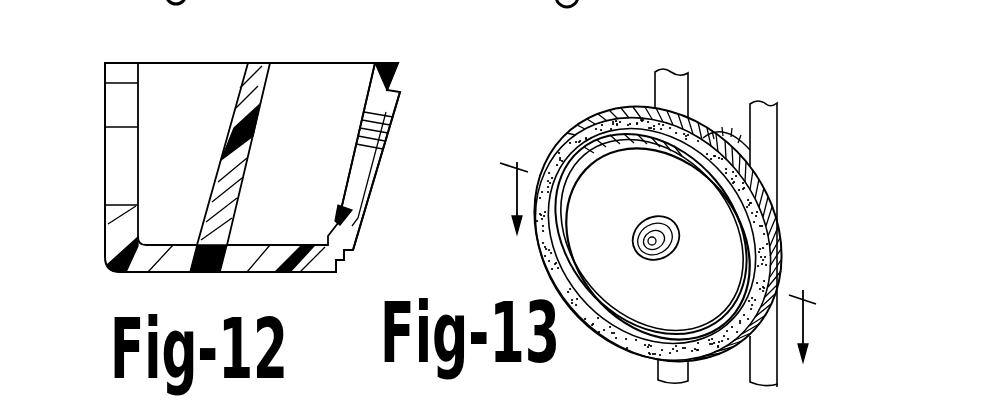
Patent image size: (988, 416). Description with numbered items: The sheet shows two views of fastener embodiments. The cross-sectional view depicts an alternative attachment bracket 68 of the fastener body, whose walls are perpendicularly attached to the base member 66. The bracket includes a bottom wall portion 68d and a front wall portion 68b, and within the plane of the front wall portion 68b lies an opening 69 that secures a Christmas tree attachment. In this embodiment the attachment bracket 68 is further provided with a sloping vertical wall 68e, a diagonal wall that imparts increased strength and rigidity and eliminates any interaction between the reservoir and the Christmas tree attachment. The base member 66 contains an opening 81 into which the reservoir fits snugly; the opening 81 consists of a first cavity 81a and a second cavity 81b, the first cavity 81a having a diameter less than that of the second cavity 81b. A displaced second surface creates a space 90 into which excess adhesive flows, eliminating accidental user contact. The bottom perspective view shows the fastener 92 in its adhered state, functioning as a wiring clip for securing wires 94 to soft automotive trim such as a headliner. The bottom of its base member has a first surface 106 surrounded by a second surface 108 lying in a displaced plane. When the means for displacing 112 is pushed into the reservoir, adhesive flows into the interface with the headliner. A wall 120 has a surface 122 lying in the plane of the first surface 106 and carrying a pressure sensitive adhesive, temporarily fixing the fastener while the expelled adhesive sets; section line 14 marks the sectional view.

In FIG. 12, the attachment bracket 68 is at (100, 278).
In FIG. 12, the front wall portion 68b is at (120, 224).
In FIG. 12, the bottom wall portion 68d is at (172, 262).
In FIG. 12, the sloping vertical wall 68e is at (262, 86).
In FIG. 12, the opening 69 is at (117, 203).
In FIG. 12, the base member 66 is at (376, 103).
In FIG. 12, the opening 81 is at (338, 185).
In FIG. 12, the first cavity 81a is at (368, 182).
In FIG. 12, the second cavity 81b is at (380, 148).
In FIG. 12, the space 90 is at (402, 82).
In FIG. 13, the fastener 92 is at (590, 98).
In FIG. 13, the wires 94 is at (770, 136).
In FIG. 13, the first surface 106 is at (665, 313).
In FIG. 13, the second surface 108 is at (583, 156).
In FIG. 13, the means for displacing 112 is at (650, 250).
In FIG. 13, the wall 120 is at (692, 124).
In FIG. 13, the surface 122 is at (558, 262).
In FIG. 13, the section line 14- 14 is at (660, 264).